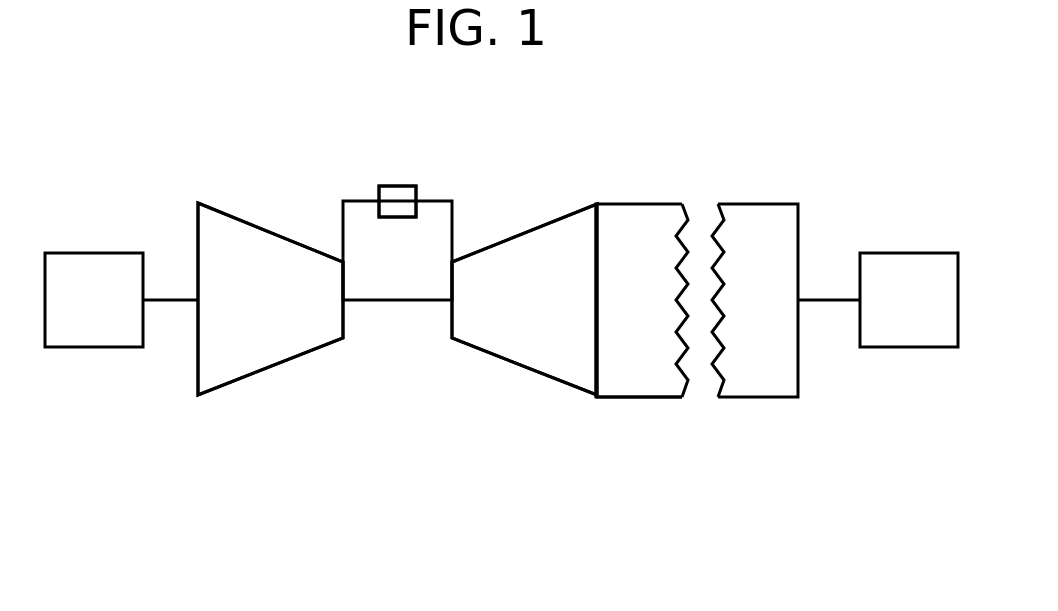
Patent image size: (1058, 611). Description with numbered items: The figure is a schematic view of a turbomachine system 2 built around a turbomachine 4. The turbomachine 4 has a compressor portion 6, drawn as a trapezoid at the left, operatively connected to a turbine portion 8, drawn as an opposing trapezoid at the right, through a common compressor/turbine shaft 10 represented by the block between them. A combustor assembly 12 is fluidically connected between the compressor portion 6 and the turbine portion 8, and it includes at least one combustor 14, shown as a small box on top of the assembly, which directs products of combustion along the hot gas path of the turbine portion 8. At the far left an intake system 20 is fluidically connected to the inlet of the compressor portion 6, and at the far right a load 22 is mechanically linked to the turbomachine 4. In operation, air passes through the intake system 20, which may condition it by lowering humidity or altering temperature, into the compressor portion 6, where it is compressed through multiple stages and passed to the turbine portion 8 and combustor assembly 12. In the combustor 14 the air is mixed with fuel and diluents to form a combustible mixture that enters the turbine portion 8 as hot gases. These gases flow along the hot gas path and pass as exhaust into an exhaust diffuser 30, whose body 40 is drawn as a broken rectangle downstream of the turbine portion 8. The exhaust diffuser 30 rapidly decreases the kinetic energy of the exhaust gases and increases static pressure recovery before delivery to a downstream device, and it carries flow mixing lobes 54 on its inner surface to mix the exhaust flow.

The turbomachine system 2 is at (201, 184).
The turbomachine 4 is at (612, 422).
The compressor portion 6 is at (250, 370).
The turbine portion 8 is at (535, 347).
The common compressor/turbine shaft 10 is at (395, 302).
The combustor assembly 12 is at (424, 177).
The combustor 14 is at (390, 198).
The intake system 20 is at (95, 348).
The load 22 is at (918, 336).
The exhaust diffuser 30 is at (653, 368).
The body 40 is at (634, 192).
The flow mixing lobe 54 is at (600, 216).